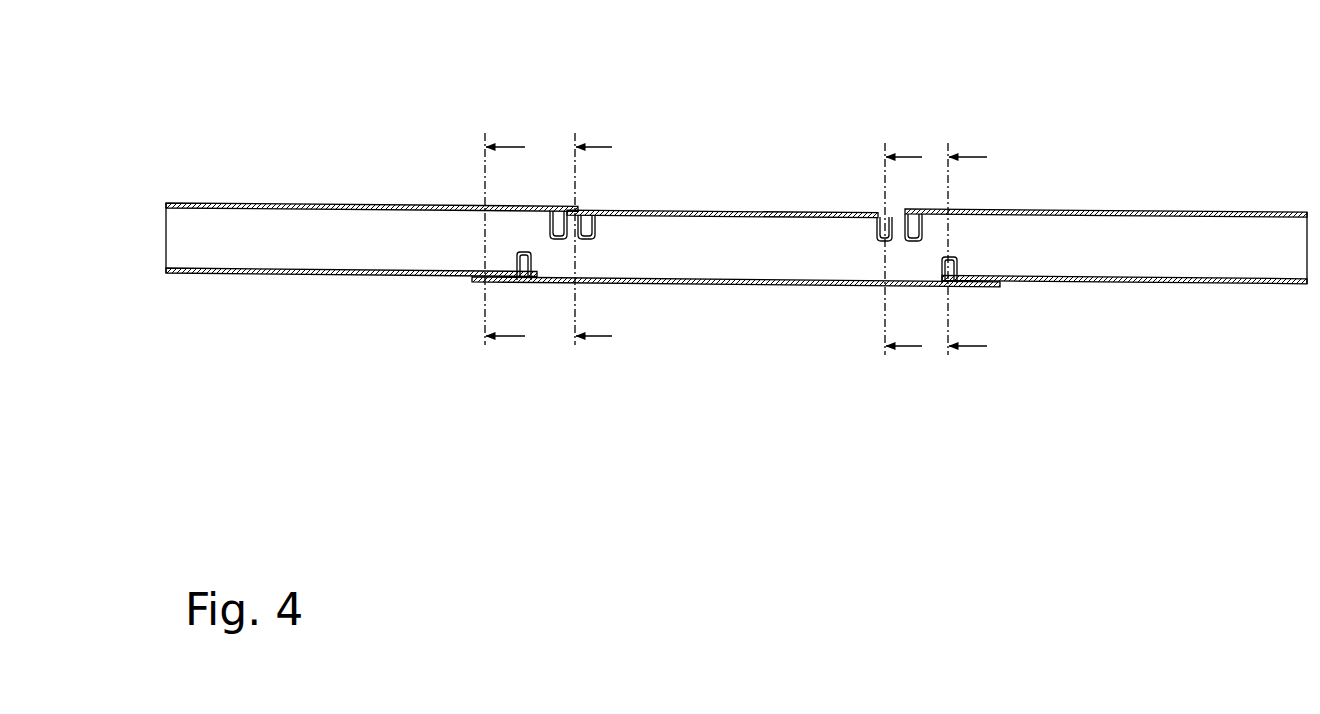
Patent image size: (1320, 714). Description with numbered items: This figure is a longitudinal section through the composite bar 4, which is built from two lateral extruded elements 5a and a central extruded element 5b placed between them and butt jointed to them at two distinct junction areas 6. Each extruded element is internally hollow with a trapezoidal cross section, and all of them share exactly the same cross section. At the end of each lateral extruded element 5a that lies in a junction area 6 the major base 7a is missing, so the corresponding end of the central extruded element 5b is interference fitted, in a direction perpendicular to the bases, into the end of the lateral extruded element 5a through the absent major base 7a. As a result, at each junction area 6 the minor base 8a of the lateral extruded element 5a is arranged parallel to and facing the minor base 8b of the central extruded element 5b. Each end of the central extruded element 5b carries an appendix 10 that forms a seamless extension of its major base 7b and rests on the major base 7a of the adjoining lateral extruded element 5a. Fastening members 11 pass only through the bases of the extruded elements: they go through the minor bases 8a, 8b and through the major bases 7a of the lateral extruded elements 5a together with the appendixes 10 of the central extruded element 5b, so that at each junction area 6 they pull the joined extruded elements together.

The composite bar 4 is at (1102, 565).
The lateral extruded element 5a is at (343, 121).
The central extruded element 5b is at (732, 122).
The junction area 6 is at (529, 367).
The major base of lateral extruded element 7a is at (355, 277).
The major base of central extruded element 7b is at (752, 284).
The minor base of lateral extruded element 8a is at (423, 205).
The minor base of central extruded element 8b is at (783, 209).
The appendix 10 is at (473, 298).
The fastening member 11 is at (558, 208).